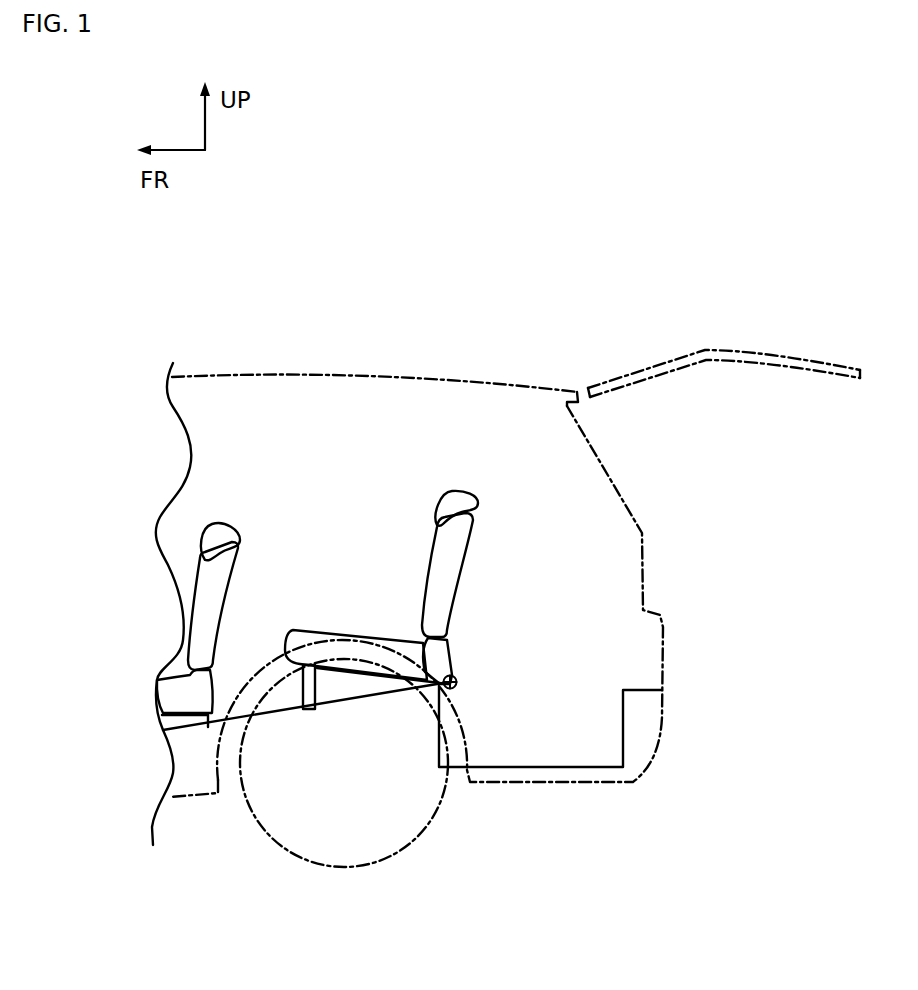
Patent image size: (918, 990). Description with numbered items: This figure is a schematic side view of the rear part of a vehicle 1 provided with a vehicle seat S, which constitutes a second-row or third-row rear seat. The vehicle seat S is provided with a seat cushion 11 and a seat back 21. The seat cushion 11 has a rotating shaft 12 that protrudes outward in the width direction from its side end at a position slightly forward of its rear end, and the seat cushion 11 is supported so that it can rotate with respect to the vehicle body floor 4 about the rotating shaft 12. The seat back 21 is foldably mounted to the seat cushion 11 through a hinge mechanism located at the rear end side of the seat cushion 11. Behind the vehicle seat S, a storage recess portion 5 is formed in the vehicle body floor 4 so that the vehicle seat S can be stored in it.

The vehicle 1 is at (491, 304).
The vehicle seat S is at (409, 564).
The seat back 21 is at (458, 559).
The seat cushion 11 is at (302, 633).
The rotating shaft 12 is at (457, 680).
The vehicle body floor 4 is at (272, 703).
The storage recess portion 5 is at (623, 717).